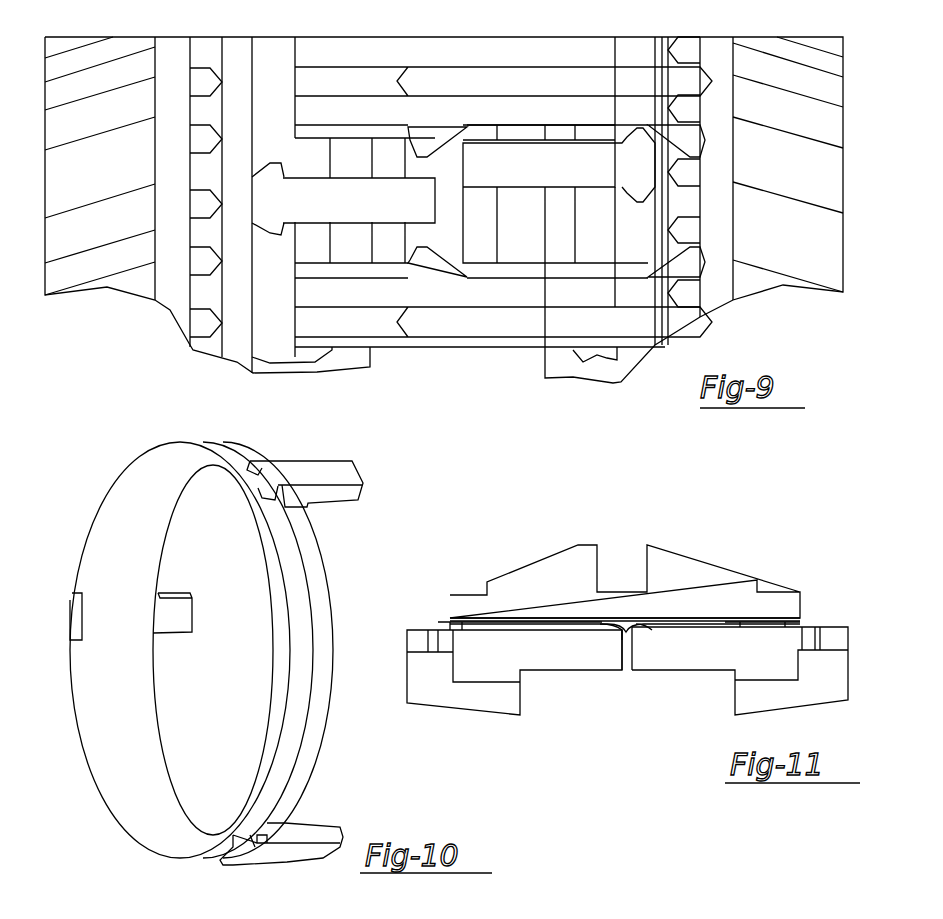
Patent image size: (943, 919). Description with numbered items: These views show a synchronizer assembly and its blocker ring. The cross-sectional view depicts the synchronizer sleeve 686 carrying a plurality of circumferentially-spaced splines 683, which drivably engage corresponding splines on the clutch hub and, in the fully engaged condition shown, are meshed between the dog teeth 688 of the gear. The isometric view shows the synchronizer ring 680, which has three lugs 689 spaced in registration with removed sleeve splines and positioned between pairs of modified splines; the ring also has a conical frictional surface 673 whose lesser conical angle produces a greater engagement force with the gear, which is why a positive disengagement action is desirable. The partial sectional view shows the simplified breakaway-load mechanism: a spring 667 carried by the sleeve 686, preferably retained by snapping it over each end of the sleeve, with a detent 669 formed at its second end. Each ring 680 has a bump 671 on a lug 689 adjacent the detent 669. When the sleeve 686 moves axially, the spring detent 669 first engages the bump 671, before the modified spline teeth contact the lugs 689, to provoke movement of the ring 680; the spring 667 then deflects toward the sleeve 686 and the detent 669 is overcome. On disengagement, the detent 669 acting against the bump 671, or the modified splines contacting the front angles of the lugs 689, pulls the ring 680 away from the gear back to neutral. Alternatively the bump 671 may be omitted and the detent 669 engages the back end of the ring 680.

In FIG. 10, the synchronizer ring 680 is at (196, 620).
In FIG. 11, the synchronizer ring 680 is at (428, 680).
In FIG. 9, the splines 683 is at (572, 95).
In FIG. 9, the dog teeth 688 is at (718, 26).
In FIG. 10, the frictional surface 673 is at (145, 523).
In FIG. 10, the lugs 689 is at (322, 478).
In FIG. 11, the synchronizer sleeve 686 is at (667, 570).
In FIG. 11, the spring 667 is at (798, 602).
In FIG. 11, the bump 671 is at (608, 630).
In FIG. 11, the detent 669 is at (627, 630).